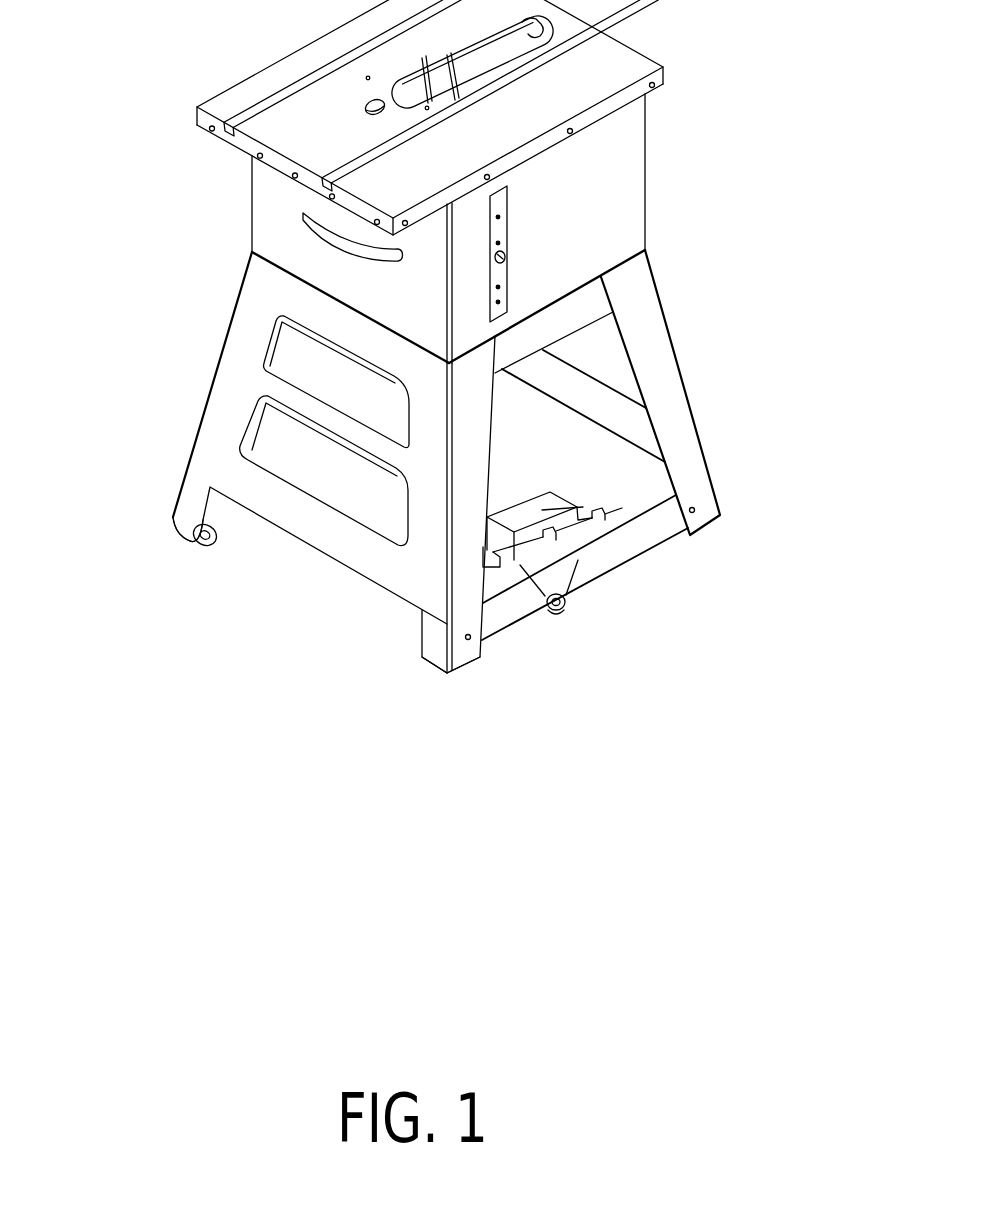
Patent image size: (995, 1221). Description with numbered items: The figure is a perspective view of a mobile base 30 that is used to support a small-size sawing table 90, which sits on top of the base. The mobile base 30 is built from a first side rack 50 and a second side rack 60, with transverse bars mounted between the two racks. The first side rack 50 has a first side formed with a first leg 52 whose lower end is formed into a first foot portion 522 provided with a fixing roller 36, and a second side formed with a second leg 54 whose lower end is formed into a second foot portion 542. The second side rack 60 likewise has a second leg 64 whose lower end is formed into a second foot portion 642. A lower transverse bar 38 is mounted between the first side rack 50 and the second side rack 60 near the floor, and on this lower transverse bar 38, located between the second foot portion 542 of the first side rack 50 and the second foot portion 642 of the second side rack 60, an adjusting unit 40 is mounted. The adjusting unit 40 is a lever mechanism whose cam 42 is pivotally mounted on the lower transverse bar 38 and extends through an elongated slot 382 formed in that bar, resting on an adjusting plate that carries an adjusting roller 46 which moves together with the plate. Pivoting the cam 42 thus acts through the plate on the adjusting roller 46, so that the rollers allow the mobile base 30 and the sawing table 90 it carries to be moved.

The small-size sawing table 90 is at (627, 165).
The mobile base 30 is at (768, 218).
The first side rack 50 is at (261, 506).
The first leg 52 is at (238, 451).
The first foot portion 522 is at (183, 508).
The fixing roller 36 is at (210, 545).
The second leg 54 is at (417, 548).
The second foot portion 542 is at (458, 656).
The second side rack 60 is at (671, 445).
The second leg 64 is at (697, 450).
The second foot portion 642 is at (718, 512).
The adjusting unit 40 is at (543, 509).
The lower transverse bar 38 is at (615, 594).
The elongated slot 382 is at (598, 524).
The cam 42 is at (544, 540).
The adjusting roller 46 is at (560, 598).